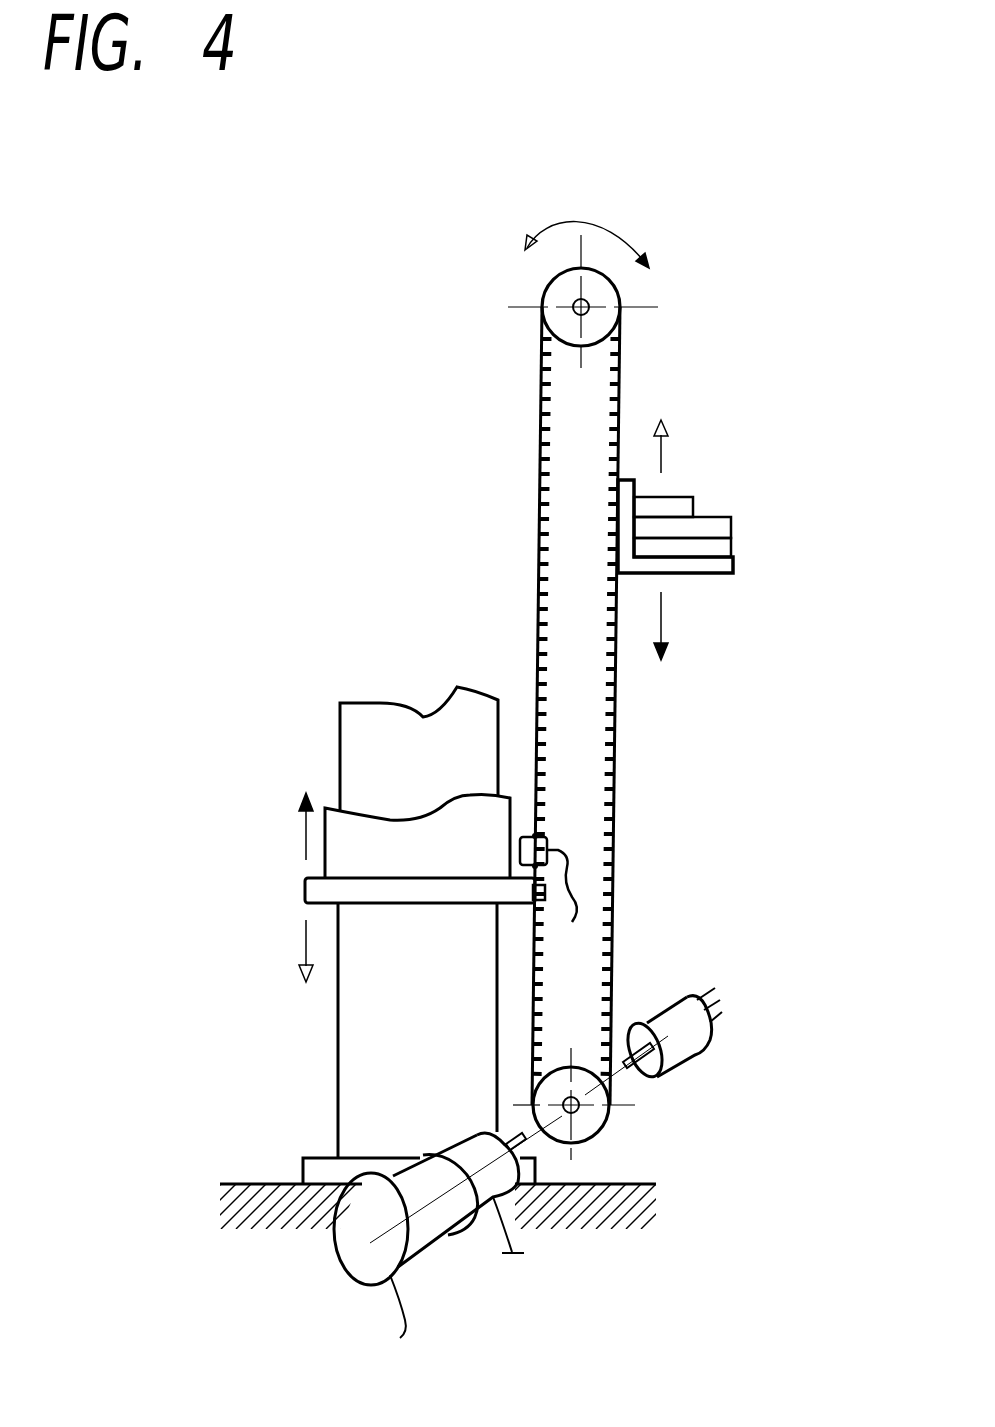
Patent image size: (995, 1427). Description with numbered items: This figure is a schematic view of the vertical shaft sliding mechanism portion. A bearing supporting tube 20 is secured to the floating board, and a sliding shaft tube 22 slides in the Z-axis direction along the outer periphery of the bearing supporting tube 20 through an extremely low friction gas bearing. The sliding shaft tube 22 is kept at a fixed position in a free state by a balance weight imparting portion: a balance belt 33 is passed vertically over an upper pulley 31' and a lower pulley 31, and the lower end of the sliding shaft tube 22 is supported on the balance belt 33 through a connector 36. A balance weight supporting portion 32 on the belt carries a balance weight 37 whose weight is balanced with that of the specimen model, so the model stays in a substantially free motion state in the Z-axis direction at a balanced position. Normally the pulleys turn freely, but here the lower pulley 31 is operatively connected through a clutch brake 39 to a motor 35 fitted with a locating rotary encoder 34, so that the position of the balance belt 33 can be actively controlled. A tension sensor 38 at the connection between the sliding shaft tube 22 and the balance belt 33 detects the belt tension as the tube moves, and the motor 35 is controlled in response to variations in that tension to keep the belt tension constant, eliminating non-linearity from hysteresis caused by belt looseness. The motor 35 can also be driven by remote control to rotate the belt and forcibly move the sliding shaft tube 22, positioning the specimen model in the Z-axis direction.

The bearing supporting tube 20 is at (383, 1000).
The sliding shaft tube 22 is at (413, 835).
The pulley 31' is at (526, 295).
The pulley 31 is at (587, 1192).
The balance belt 33 is at (540, 466).
The balance weight supporting portion 32 is at (700, 567).
The balance weight 37 is at (737, 537).
The tension sensor 38 is at (548, 843).
The connector 36 is at (525, 895).
The locating rotary encoder 34 is at (691, 1047).
The motor 35 is at (358, 1253).
The clutch brake 39 is at (467, 1143).